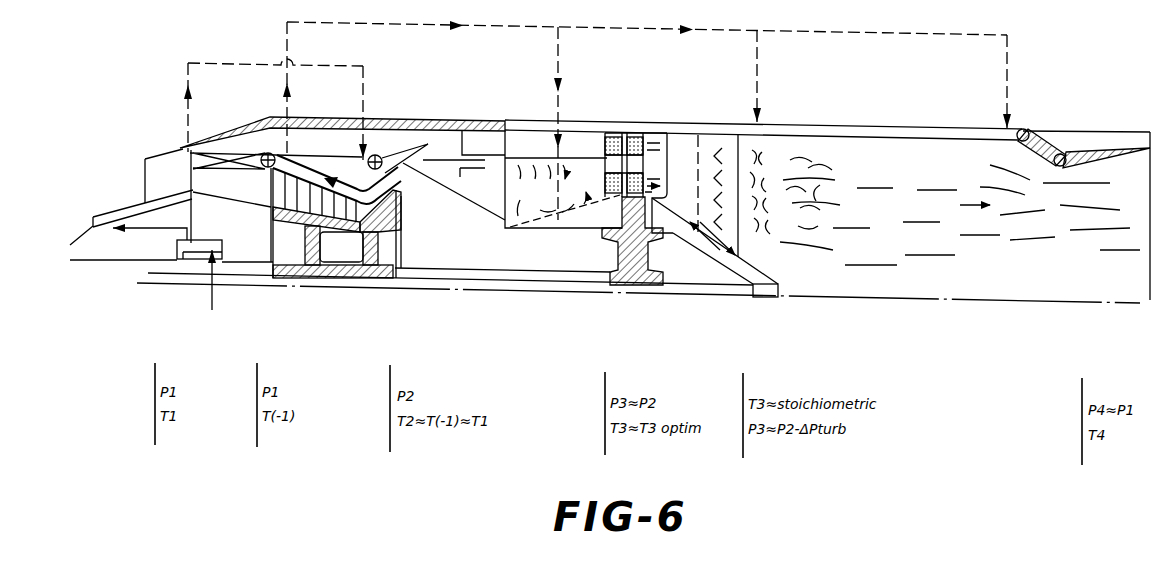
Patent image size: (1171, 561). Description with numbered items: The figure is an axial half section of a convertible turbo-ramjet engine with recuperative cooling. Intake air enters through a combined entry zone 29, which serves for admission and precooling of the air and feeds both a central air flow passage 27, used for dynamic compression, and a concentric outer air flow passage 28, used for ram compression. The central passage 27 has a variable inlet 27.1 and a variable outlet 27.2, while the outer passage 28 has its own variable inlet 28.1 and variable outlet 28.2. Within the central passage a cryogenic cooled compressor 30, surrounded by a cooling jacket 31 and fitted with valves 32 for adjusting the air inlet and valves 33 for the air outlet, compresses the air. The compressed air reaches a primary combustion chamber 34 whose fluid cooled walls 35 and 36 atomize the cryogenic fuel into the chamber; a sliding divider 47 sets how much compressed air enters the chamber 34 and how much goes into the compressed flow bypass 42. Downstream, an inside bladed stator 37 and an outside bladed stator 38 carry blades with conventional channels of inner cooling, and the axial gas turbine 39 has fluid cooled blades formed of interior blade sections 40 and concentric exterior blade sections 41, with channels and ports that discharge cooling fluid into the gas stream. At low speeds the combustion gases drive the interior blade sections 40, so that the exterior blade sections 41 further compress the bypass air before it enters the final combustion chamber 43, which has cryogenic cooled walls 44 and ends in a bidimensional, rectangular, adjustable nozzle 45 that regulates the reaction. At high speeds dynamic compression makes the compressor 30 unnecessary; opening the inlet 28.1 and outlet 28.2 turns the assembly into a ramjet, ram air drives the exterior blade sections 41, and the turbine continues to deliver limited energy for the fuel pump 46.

The central air flow passage 27 is at (262, 188).
The variable inlet 27.1 is at (217, 180).
The variable outlet 27.2 is at (415, 170).
The concentric outer air flow passage 28 is at (272, 142).
The variable inlet 28.1 is at (223, 147).
The variable outlet 28.2 is at (387, 138).
The combined entry zone 29 is at (193, 172).
The cryogenic cooled compressor 30 is at (312, 205).
The cooling jacket 31 is at (118, 210).
The valves for adjusting the air inlet 32 is at (182, 149).
The valves for the air outlet 33 is at (412, 138).
The primary combustion chamber 34 is at (505, 228).
The fluid cooled wall 35 is at (573, 225).
The fluid cooled wall 36 is at (600, 150).
The inside bladed stator 37 is at (613, 197).
The outside bladed stator 38 is at (635, 137).
The axial gas turbine 39 is at (640, 275).
The interior blade sections 40 is at (658, 200).
The exterior blade sections 41 is at (642, 142).
The compressed flow bypass 42 is at (543, 147).
The final combustion chamber 43 is at (822, 150).
The cryogenic cooled walls 44 is at (857, 133).
The adjustable nozzle 45 is at (1040, 150).
The fuel pump 46 is at (200, 253).
The sliding divider 47 is at (455, 177).